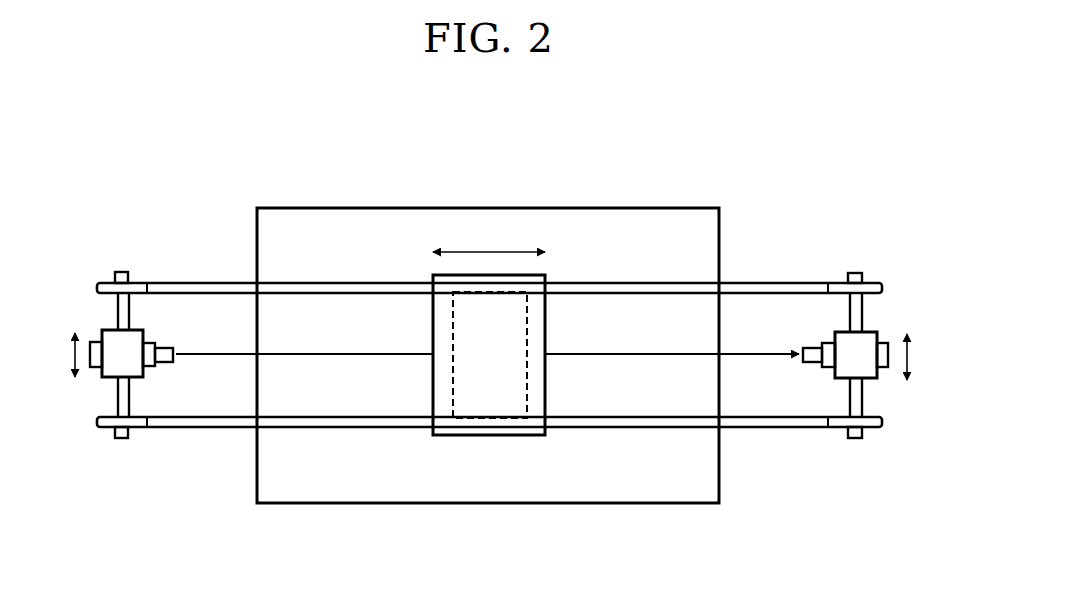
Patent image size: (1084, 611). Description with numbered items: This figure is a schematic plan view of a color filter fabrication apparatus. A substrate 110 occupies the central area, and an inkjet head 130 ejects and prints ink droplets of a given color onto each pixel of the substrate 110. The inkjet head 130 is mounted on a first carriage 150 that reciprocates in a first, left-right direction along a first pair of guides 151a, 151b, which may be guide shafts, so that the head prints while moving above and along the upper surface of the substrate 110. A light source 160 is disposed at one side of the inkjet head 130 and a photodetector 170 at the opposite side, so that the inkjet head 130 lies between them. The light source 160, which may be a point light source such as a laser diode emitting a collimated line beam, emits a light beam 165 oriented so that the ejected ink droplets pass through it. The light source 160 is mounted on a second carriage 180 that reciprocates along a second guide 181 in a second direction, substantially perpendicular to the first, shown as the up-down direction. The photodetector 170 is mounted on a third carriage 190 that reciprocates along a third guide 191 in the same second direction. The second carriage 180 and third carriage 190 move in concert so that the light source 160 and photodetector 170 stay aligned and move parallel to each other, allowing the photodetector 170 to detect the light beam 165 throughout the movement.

The substrate 110 is at (487, 208).
The inkjet head 130 is at (467, 418).
The first carriage 150 is at (515, 435).
The first guide 151a is at (772, 284).
The first guide 151b is at (750, 428).
The light source 160 is at (155, 345).
The light beam 165 is at (598, 355).
The photodetector 170 is at (820, 368).
The second carriage 180 is at (106, 370).
The second guide 181 is at (130, 398).
The third carriage 190 is at (868, 332).
The third guide 191 is at (863, 402).